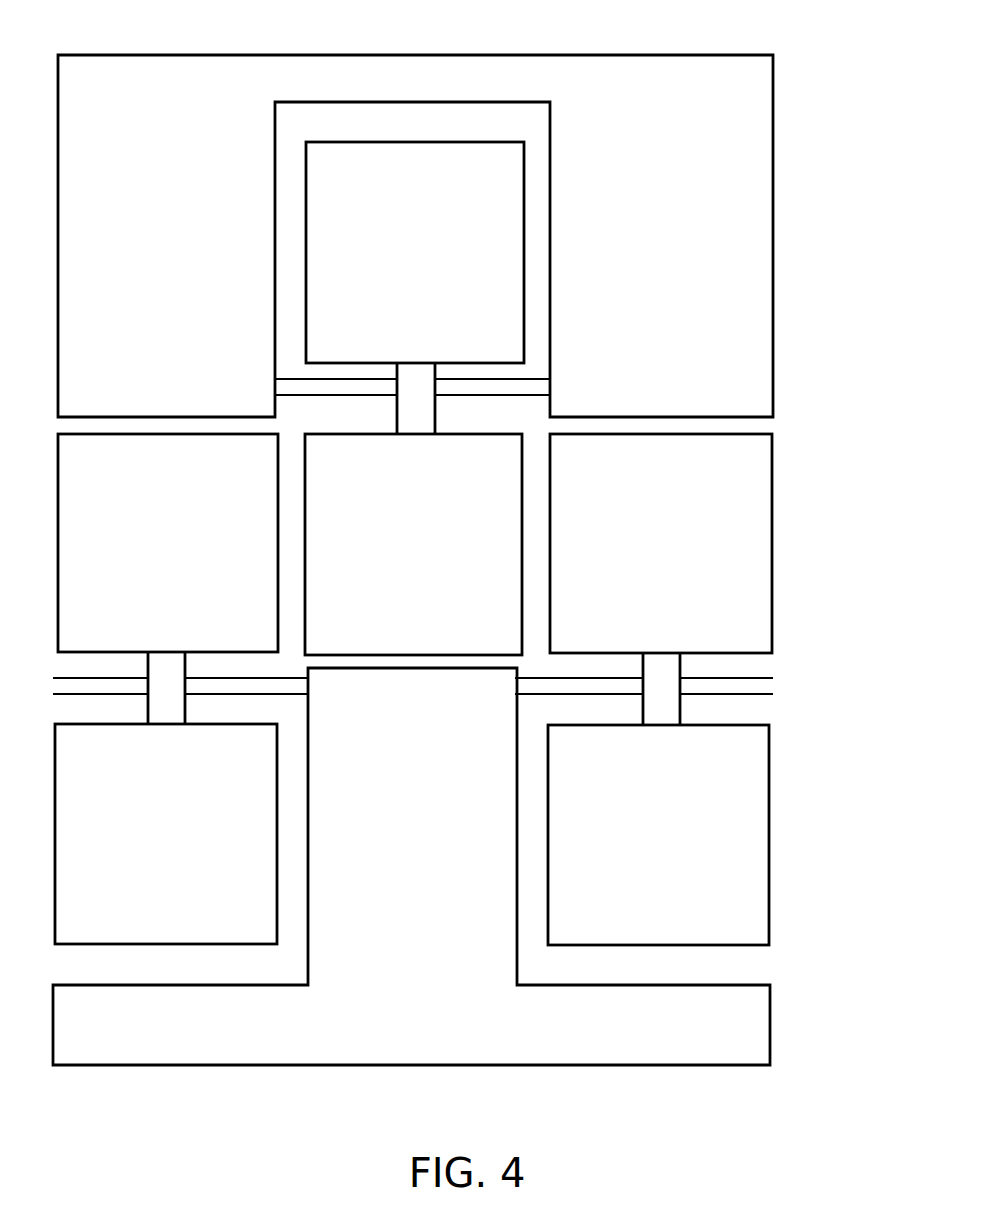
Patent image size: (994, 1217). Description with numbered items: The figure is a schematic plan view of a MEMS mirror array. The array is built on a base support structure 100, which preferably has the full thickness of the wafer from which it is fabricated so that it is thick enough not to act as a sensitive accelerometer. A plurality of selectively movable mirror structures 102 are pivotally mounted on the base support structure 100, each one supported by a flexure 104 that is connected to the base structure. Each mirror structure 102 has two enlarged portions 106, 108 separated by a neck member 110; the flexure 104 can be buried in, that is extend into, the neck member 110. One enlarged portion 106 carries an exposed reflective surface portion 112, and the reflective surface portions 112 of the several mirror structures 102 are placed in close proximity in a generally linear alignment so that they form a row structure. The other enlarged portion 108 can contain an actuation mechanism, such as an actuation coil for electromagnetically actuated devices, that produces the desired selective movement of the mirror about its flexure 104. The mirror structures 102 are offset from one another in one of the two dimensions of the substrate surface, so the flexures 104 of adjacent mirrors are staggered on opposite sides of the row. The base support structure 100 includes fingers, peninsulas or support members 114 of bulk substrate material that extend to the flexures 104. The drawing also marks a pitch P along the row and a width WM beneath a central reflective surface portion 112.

The base support structure 100 is at (524, 1066).
The mirror structure 102 is at (838, 612).
The flexure 104 is at (520, 397).
The enlarged portion 106 is at (378, 432).
The enlarged portion 108 is at (382, 140).
The neck member 110 is at (680, 706).
The reflective surface portion 112 is at (391, 266).
The support member 114 is at (153, 334).
The pitch P is at (407, 45).
The width of metal WM is at (305, 657).